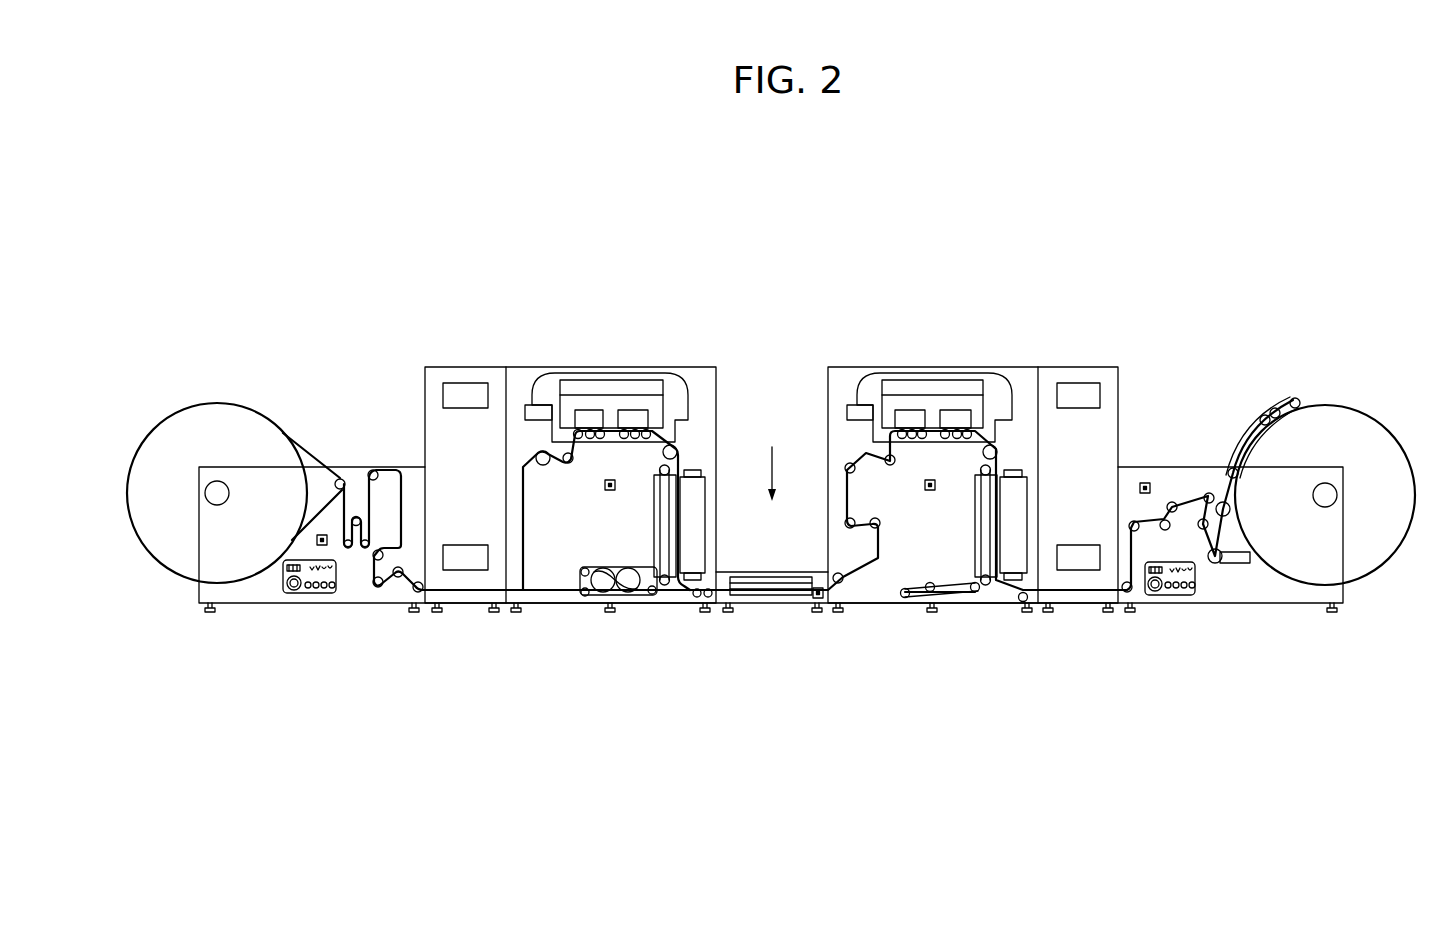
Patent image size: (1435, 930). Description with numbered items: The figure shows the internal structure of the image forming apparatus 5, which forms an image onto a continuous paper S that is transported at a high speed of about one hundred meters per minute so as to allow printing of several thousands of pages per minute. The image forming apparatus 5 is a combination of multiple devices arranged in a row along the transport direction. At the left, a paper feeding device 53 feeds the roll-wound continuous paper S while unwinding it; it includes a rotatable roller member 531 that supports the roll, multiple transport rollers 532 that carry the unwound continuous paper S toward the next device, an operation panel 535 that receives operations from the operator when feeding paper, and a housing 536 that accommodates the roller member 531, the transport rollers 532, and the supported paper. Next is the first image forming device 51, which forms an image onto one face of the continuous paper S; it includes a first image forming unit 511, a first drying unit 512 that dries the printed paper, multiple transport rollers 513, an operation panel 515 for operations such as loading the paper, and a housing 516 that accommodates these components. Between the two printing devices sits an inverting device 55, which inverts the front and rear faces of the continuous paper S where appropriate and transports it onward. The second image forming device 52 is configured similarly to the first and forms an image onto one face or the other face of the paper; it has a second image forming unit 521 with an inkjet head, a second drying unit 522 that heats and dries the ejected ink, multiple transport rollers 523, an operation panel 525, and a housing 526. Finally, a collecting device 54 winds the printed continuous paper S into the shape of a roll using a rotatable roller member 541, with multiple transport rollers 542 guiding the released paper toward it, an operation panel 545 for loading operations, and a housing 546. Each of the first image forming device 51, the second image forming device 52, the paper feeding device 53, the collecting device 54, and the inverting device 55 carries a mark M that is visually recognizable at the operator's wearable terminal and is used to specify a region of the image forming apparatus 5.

The image forming apparatus 5 is at (1313, 190).
The first image forming device 51 is at (575, 474).
The first image forming unit 511 is at (527, 376).
The first drying unit 512 is at (692, 467).
The transport rollers 513 is at (585, 598).
The operation panel 515 is at (462, 376).
The housing 516 is at (572, 373).
The second image forming device 52 is at (969, 474).
The second image forming unit 521 is at (850, 376).
The second drying unit 522 is at (1020, 467).
The transport rollers 523 is at (905, 600).
The operation panel 525 is at (1082, 376).
The housing 526 is at (933, 373).
The paper feeding device 53 is at (275, 494).
The roller member 531 is at (217, 481).
The transport rollers 532 is at (380, 592).
The operation panel 535 is at (311, 605).
The housing 536 is at (362, 467).
The collecting device 54 is at (1268, 495).
The roller member 541 is at (1325, 482).
The transport rollers 542 is at (1200, 540).
The operation panel 545 is at (1171, 605).
The housing 546 is at (1197, 467).
The inverting device 55 is at (789, 561).
The mark M is at (322, 533).
The continuous paper S is at (457, 596).